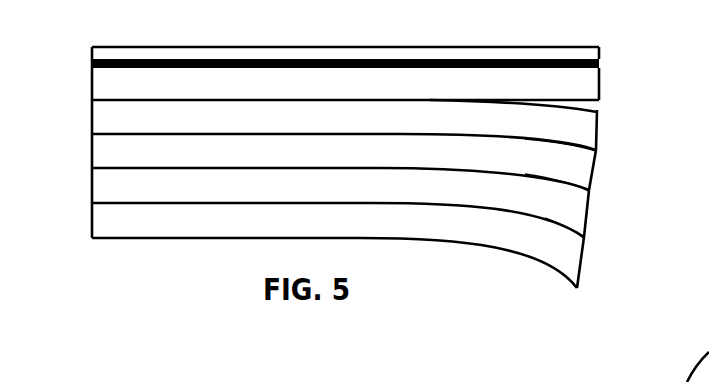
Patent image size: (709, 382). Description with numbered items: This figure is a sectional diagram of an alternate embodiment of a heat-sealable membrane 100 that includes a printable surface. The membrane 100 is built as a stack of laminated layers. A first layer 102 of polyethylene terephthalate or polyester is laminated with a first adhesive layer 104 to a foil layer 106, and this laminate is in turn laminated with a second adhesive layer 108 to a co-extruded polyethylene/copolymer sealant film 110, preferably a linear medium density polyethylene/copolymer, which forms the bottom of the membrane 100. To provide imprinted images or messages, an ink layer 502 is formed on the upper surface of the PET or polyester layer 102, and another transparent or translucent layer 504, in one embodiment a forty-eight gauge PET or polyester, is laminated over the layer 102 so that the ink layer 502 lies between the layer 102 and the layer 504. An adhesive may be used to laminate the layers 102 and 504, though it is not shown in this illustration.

The heat-sealable membrane 100 is at (235, 263).
The first layer 102 is at (599, 83).
The first adhesive layer 104 is at (597, 128).
The foil layer 106 is at (592, 183).
The second adhesive layer 108 is at (588, 228).
The co-extruded polyethylene/copolymer sealant film 110 is at (585, 271).
The ink layer 502 is at (599, 60).
The transparent or translucent layer 504 is at (550, 47).